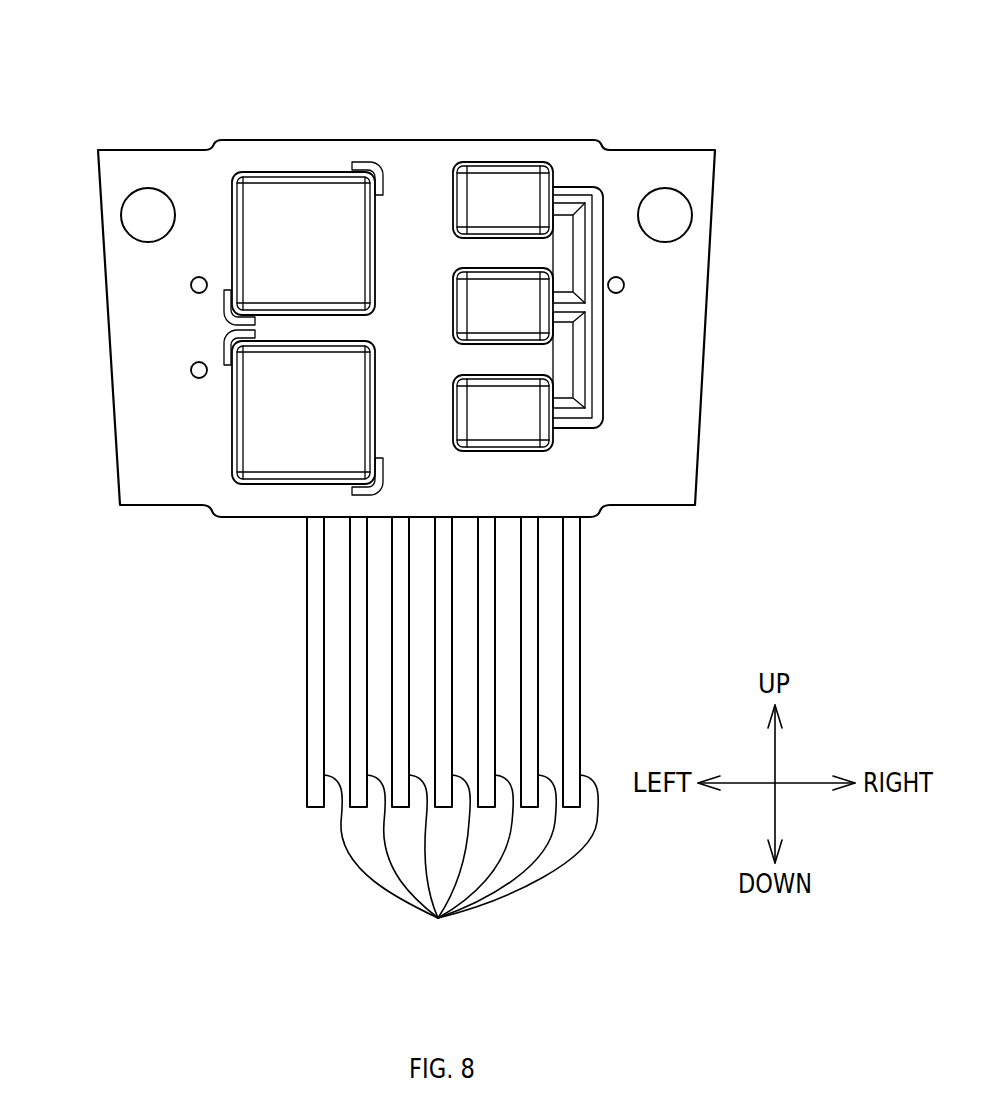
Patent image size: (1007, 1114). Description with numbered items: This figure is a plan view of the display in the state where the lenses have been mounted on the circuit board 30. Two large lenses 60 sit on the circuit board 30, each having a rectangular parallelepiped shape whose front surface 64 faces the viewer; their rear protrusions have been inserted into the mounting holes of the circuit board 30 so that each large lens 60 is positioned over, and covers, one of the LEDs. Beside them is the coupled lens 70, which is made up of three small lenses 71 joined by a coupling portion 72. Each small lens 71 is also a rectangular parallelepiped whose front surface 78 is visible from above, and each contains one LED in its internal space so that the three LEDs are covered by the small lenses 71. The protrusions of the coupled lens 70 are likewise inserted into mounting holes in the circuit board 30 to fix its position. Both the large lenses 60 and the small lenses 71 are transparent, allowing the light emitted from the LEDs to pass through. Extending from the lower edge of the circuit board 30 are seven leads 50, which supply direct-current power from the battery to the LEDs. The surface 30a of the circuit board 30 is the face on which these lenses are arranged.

The circuit board 30 is at (648, 150).
The mounting surface of circuit board 30a is at (658, 417).
The leads 50 is at (452, 735).
The large lens 60 is at (292, 168).
The front surface 64 is at (258, 218).
The coupled lens 70 is at (517, 160).
The small lens 71 is at (462, 203).
The coupling portion 72 is at (603, 257).
The front surface 78 is at (495, 187).